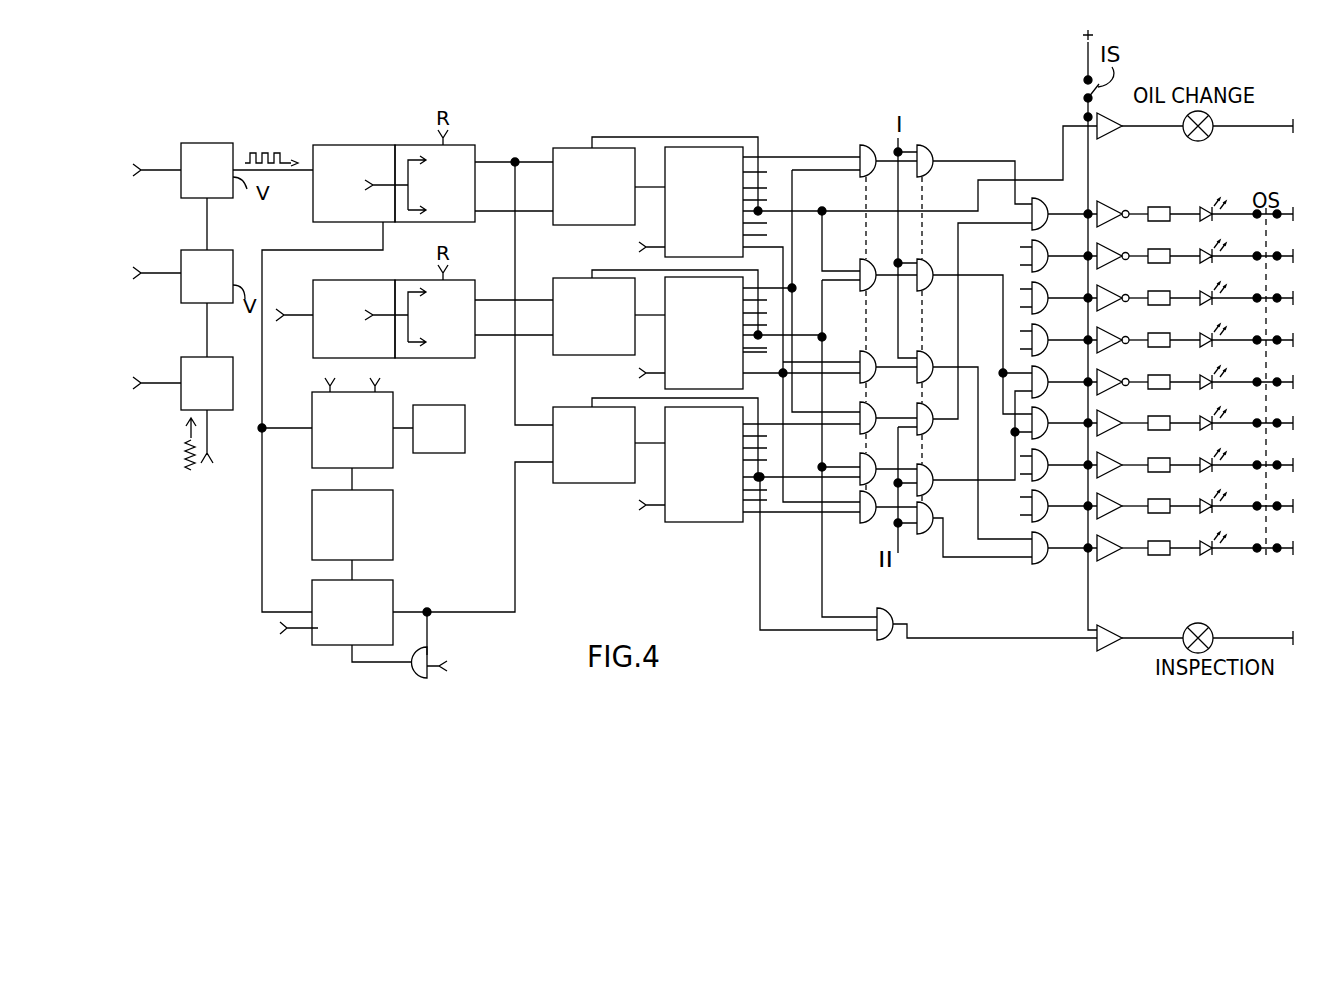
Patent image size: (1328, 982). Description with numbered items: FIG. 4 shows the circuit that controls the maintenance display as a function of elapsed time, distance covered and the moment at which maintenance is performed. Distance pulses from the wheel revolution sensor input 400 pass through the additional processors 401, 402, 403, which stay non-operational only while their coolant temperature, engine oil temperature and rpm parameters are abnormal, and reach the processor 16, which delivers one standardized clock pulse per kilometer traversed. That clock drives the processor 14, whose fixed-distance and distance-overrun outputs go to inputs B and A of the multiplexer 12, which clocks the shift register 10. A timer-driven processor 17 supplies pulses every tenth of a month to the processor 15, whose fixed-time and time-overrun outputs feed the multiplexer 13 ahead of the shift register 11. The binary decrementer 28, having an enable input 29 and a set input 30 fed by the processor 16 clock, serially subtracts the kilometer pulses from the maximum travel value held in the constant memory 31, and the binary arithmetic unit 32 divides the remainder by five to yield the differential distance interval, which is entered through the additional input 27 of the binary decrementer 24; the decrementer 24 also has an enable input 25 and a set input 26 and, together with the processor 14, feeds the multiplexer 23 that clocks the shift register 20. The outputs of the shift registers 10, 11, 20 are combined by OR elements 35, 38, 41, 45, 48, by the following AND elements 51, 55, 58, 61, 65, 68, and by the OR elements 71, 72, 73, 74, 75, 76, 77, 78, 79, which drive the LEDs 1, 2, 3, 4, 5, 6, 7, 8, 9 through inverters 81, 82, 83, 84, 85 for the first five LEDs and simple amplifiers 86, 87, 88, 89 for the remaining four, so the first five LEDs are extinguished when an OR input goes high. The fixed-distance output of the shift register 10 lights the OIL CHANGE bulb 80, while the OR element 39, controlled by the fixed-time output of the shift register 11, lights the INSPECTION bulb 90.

The additional processor 403 is at (181, 160).
The additional processor 402 is at (181, 268).
The additional processor 401 is at (180, 373).
The wheel revolution sensor input 400 is at (222, 482).
The processor 16 is at (339, 145).
The processor 14 is at (465, 145).
The processor 17 is at (363, 280).
The processor 15 is at (465, 280).
The multiplexer 12 is at (572, 148).
The shift register 10 is at (695, 147).
The multiplexer 13 is at (573, 278).
The shift register 11 is at (656, 303).
The multiplexer 23 is at (570, 407).
The shift register 20 is at (679, 522).
The binary decrementer 28 is at (393, 402).
The enable input 29 is at (327, 398).
The set input 30 is at (379, 398).
The constant memory 31 is at (465, 430).
The binary arithmetic unit 32 is at (393, 524).
The additional input 27 is at (353, 581).
The enable input 25 is at (301, 629).
The binary decrementer 24 is at (397, 601).
The set input 26 is at (352, 645).
The OR element 35 is at (870, 261).
The OR element 38 is at (872, 354).
The OR element 41 is at (874, 407).
The OR element 45 is at (874, 459).
The OR element 48 is at (880, 494).
The AND element 51 is at (925, 146).
The AND element 55 is at (922, 260).
The AND element 58 is at (921, 353).
The AND element 61 is at (926, 408).
The AND element 65 is at (929, 475).
The AND element 68 is at (933, 510).
The OR element 39 is at (882, 638).
The OR element 71 is at (1046, 209).
The OR element 72 is at (1046, 251).
The OR element 73 is at (1046, 293).
The OR element 74 is at (1046, 335).
The OR element 75 is at (1046, 377).
The OR element 76 is at (1046, 418).
The OR element 77 is at (1046, 460).
The OR element 78 is at (1046, 501).
The OR element 79 is at (1046, 543).
The inverter 81 is at (1106, 212).
The inverter 82 is at (1106, 254).
The inverter 83 is at (1106, 296).
The inverter 84 is at (1106, 338).
The inverter 85 is at (1106, 380).
The amplifier 86 is at (1106, 421).
The amplifier 87 is at (1106, 463).
The amplifier 88 is at (1106, 504).
The amplifier 89 is at (1106, 546).
The LED 1 is at (1220, 203).
The LED 2 is at (1220, 245).
The LED 3 is at (1220, 287).
The LED 4 is at (1220, 329).
The LED 5 is at (1220, 371).
The LED 6 is at (1220, 412).
The LED 7 is at (1220, 454).
The LED 8 is at (1220, 495).
The LED 9 is at (1220, 537).
The bulb 80 is at (1209, 138).
The bulb 90 is at (1210, 628).